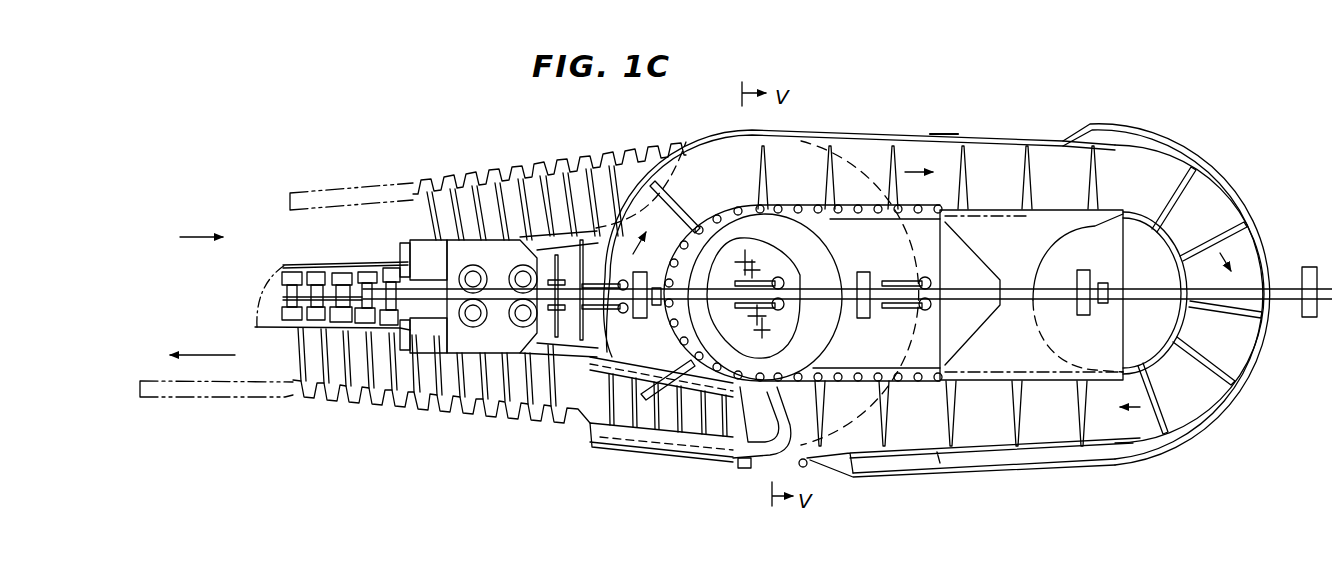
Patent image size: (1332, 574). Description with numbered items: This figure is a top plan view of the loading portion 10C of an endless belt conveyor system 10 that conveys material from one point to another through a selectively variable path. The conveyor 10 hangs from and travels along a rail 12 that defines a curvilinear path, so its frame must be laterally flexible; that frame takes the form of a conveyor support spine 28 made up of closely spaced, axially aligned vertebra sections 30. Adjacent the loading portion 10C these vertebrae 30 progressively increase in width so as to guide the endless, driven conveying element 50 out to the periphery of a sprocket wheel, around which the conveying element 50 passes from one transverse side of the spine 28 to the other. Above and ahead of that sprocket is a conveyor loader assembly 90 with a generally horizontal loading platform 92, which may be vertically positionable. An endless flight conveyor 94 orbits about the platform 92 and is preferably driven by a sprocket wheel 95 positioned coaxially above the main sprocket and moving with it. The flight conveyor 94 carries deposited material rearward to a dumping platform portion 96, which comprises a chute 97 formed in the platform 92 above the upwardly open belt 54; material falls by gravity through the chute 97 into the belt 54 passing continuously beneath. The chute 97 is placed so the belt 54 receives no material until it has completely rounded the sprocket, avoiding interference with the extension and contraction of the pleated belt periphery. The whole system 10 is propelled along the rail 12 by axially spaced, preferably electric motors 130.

The endless belt conveyor system 10 is at (939, 115).
The rail 12 is at (1278, 292).
The conveyor support spine 28 is at (318, 270).
The vertebra sections 30 is at (390, 272).
The conveying element 50 is at (571, 165).
The belt 54 is at (677, 413).
The conveyor loader assembly 90 is at (1040, 423).
The loading platform 92 is at (1193, 403).
The endless flight conveyor 94 is at (1030, 150).
The sprocket wheel 95 is at (830, 252).
The dumping platform portion 96 is at (765, 443).
The chute 97 is at (763, 417).
The loading portion 10C is at (917, 427).
The motors 130 is at (461, 250).